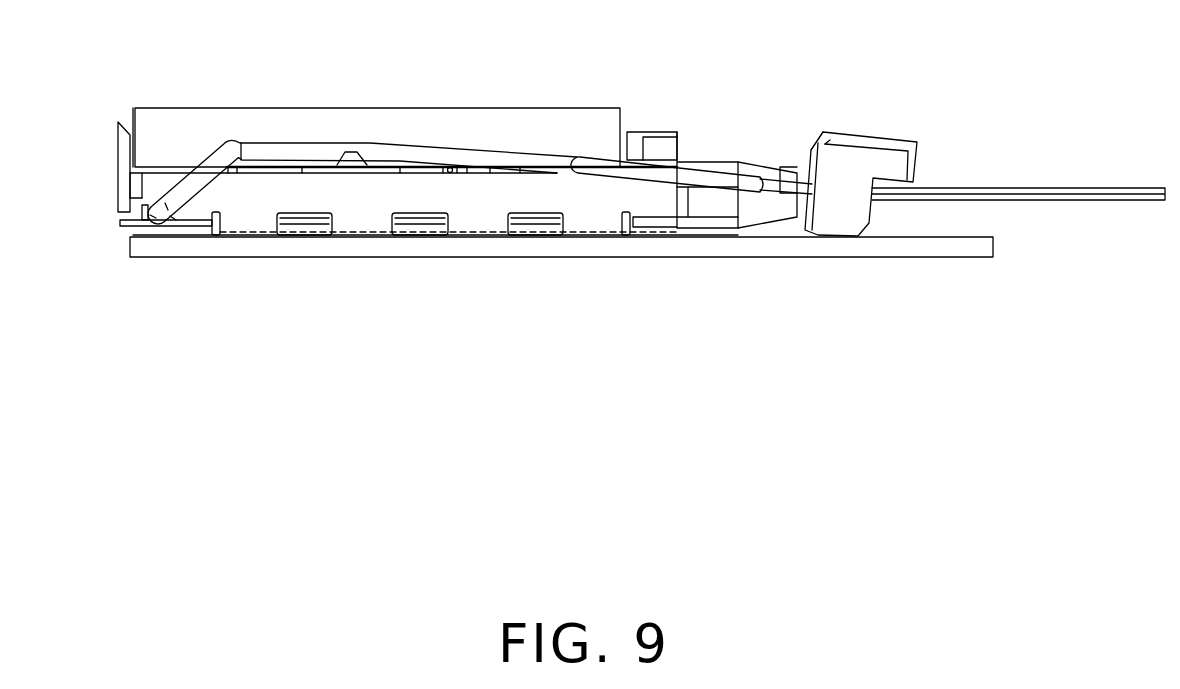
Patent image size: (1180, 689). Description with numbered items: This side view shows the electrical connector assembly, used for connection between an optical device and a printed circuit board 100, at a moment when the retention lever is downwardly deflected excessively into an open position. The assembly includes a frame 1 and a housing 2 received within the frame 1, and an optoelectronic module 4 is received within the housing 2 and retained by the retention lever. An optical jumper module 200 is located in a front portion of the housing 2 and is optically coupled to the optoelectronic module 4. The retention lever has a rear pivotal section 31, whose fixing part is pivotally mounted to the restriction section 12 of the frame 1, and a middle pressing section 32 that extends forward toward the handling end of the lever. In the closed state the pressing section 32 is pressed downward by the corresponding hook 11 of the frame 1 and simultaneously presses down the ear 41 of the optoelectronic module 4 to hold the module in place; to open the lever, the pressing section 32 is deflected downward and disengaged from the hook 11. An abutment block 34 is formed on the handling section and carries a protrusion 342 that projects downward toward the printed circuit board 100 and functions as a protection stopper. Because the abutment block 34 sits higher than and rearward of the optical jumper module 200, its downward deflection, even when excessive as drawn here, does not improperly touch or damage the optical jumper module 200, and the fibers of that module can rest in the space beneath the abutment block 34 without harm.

The frame 1 is at (592, 213).
The housing 2 is at (122, 165).
The optoelectronic module 4 is at (213, 128).
The hook 11 is at (667, 152).
The restriction section 12 is at (140, 223).
The pivotal section 31 is at (168, 213).
The pressing section 32 is at (367, 145).
The abutment block 34 is at (870, 136).
The ear 41 is at (349, 163).
The printed circuit board 100 is at (942, 243).
The optical jumper module 200 is at (720, 205).
The protrusion 342 is at (845, 215).